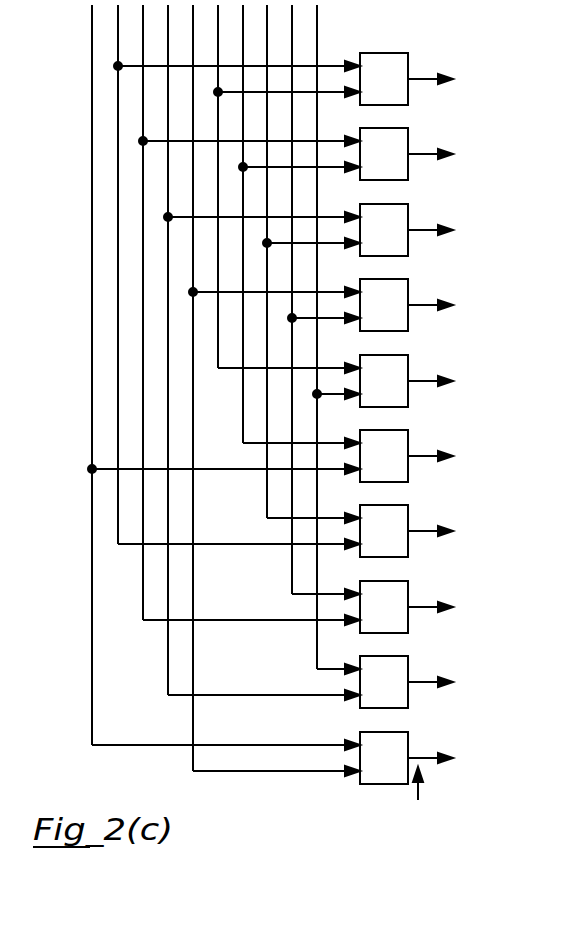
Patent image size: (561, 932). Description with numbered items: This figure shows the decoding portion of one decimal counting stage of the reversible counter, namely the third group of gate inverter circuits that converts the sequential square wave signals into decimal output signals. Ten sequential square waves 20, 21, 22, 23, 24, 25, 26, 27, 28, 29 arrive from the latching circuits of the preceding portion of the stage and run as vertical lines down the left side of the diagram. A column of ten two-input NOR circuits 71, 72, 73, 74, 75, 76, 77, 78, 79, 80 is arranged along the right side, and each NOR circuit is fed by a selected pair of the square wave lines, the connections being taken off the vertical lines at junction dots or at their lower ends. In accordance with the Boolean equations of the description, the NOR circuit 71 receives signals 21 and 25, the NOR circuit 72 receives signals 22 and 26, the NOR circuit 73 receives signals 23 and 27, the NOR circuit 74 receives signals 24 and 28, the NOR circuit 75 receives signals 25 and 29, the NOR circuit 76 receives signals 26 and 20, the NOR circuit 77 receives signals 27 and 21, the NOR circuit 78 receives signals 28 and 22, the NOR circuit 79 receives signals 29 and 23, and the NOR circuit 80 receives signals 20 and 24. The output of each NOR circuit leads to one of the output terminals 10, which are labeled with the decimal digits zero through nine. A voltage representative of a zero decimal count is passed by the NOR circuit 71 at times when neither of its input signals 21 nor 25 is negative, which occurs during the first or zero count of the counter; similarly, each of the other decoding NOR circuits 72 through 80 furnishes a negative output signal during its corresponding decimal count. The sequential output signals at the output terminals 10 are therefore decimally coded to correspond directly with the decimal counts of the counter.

The output terminals 10 is at (418, 795).
The sequential square wave signal 20 is at (92, 34).
The sequential square wave signal 21 is at (118, 34).
The sequential square wave signal 22 is at (143, 34).
The sequential square wave signal 23 is at (168, 34).
The sequential square wave signal 24 is at (193, 34).
The sequential square wave signal 25 is at (218, 34).
The sequential square wave signal 26 is at (243, 34).
The sequential square wave signal 27 is at (267, 34).
The sequential square wave signal 28 is at (292, 34).
The sequential square wave signal 29 is at (317, 34).
The decoding NOR circuit 71 is at (409, 63).
The decoding NOR circuit 72 is at (409, 138).
The decoding NOR circuit 73 is at (409, 214).
The decoding NOR circuit 74 is at (409, 289).
The decoding NOR circuit 75 is at (409, 365).
The decoding NOR circuit 76 is at (409, 440).
The decoding NOR circuit 77 is at (409, 515).
The decoding NOR circuit 78 is at (409, 591).
The decoding NOR circuit 79 is at (409, 666).
The decoding NOR circuit 80 is at (409, 742).